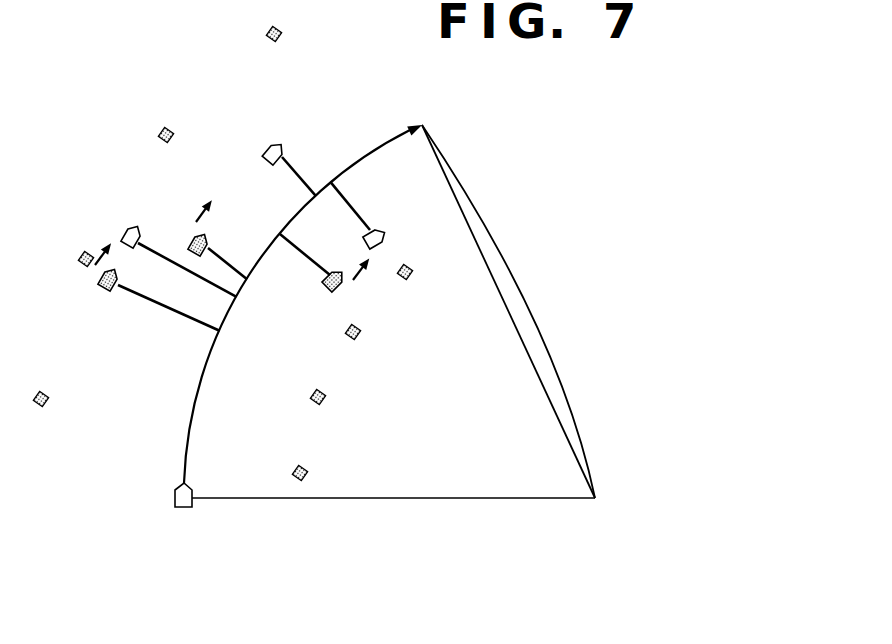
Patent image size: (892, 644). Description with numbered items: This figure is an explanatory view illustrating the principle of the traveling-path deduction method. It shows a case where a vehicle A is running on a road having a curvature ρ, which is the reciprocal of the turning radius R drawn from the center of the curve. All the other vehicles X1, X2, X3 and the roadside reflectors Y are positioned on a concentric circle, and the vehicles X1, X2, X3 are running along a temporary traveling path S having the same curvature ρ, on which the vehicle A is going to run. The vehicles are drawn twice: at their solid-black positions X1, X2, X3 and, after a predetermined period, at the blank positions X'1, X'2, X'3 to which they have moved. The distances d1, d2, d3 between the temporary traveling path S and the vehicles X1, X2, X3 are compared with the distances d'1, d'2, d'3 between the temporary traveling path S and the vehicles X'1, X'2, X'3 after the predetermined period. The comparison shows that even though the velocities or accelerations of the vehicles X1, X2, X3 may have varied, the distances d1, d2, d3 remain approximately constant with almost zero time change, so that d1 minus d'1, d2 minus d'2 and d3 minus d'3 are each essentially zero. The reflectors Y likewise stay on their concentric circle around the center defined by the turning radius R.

The other vehicle X1 is at (103, 288).
The moved position of vehicle X'1 is at (113, 224).
The other vehicle X2 is at (190, 240).
The moved position of vehicle X'2 is at (267, 131).
The other vehicle X3 is at (326, 287).
The moved position of vehicle X'3 is at (405, 230).
The distance d1 is at (219, 331).
The distance after predetermined period d'1 is at (187, 270).
The distance d2 is at (247, 278).
The distance after predetermined period d'2 is at (306, 174).
The distance d3 is at (330, 272).
The distance after predetermined period d'3 is at (358, 206).
The reflectors Y is at (267, 37).
The temporary traveling path S is at (191, 420).
The vehicle A is at (183, 510).
The turning radius R is at (508, 311).